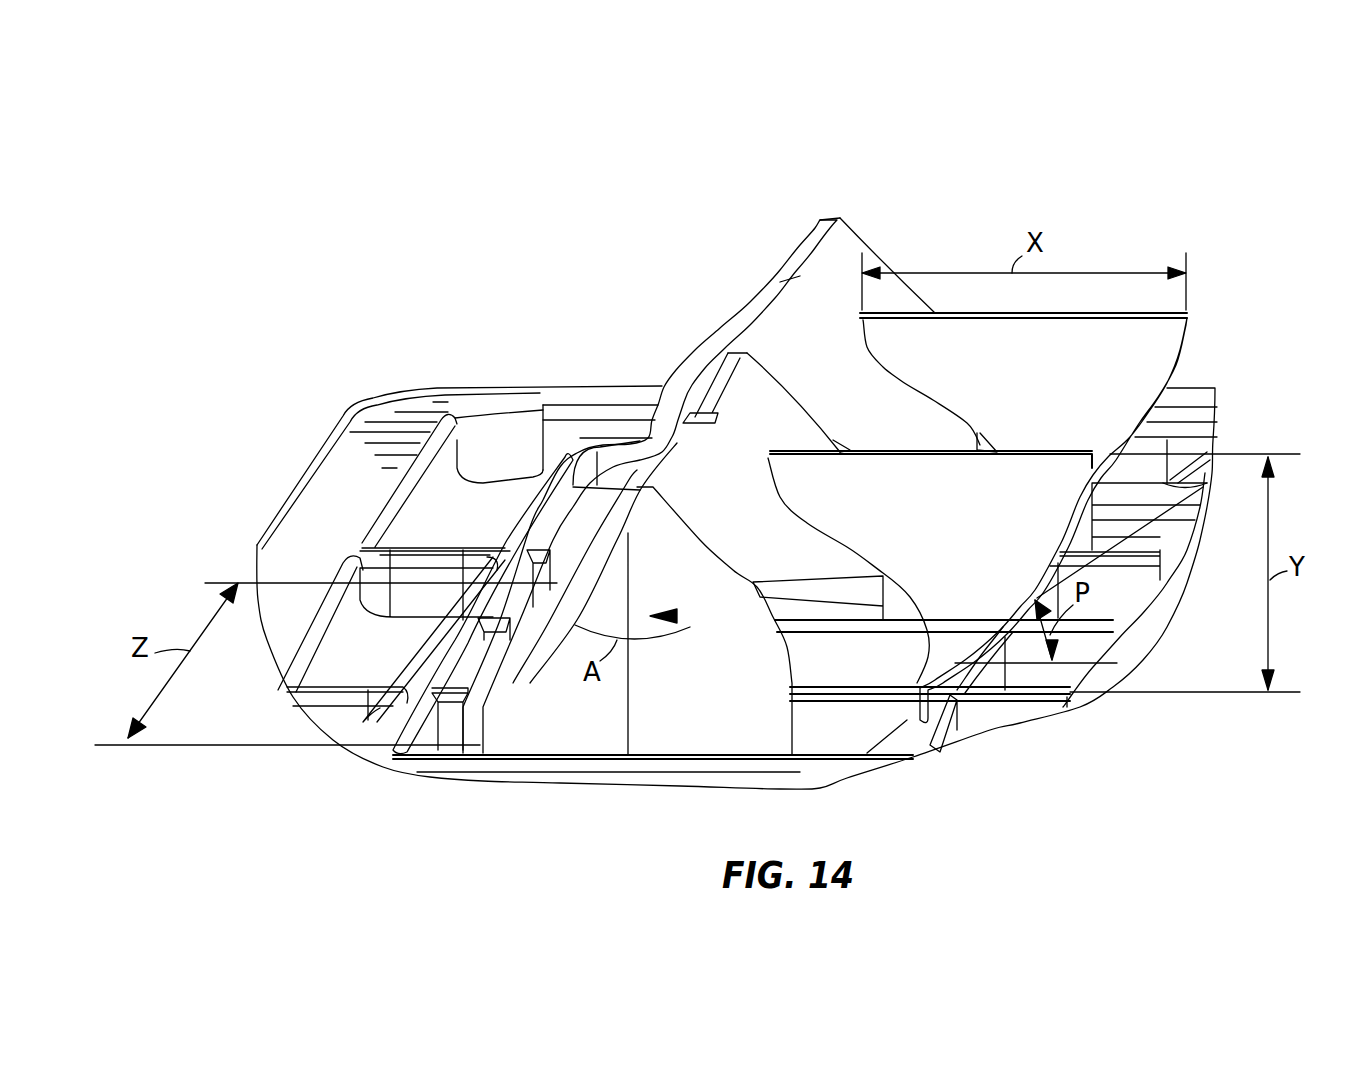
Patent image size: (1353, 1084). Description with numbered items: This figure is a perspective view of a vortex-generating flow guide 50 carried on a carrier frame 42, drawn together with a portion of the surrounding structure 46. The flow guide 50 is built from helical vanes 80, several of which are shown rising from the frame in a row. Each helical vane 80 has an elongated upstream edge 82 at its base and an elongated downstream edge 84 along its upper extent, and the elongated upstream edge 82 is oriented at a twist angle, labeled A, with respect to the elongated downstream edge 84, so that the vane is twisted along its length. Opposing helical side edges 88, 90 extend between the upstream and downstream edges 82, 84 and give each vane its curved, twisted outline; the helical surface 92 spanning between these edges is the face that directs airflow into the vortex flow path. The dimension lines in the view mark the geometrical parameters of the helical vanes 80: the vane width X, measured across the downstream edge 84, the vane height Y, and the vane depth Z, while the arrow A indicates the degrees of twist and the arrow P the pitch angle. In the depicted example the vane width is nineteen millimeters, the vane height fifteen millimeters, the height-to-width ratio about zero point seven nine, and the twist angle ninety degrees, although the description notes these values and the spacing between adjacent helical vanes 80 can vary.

The carrier frame 42 is at (545, 405).
The body 46 is at (343, 478).
The vortex-generating flow guide 50 is at (1100, 187).
The helical vane 80 is at (745, 275).
The elongated upstream edge 82 is at (643, 758).
The elongated downstream edge 84 is at (808, 245).
The helical side edge 88 is at (727, 323).
The helical side edge 90 is at (853, 237).
The helical surface 92 is at (790, 488).